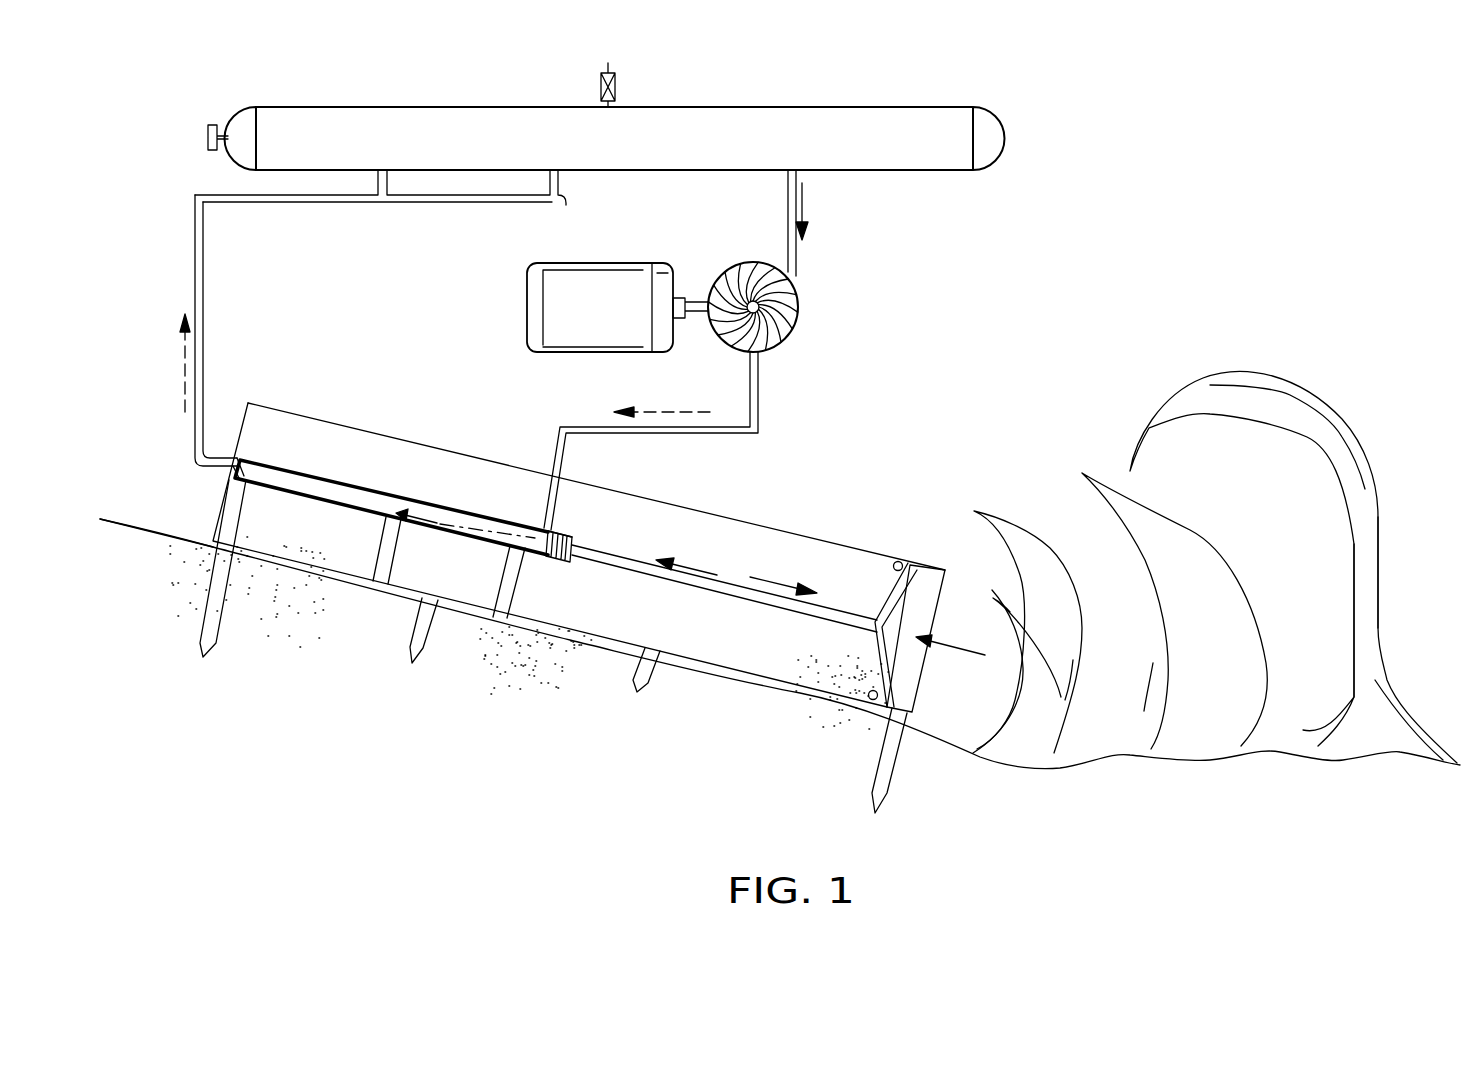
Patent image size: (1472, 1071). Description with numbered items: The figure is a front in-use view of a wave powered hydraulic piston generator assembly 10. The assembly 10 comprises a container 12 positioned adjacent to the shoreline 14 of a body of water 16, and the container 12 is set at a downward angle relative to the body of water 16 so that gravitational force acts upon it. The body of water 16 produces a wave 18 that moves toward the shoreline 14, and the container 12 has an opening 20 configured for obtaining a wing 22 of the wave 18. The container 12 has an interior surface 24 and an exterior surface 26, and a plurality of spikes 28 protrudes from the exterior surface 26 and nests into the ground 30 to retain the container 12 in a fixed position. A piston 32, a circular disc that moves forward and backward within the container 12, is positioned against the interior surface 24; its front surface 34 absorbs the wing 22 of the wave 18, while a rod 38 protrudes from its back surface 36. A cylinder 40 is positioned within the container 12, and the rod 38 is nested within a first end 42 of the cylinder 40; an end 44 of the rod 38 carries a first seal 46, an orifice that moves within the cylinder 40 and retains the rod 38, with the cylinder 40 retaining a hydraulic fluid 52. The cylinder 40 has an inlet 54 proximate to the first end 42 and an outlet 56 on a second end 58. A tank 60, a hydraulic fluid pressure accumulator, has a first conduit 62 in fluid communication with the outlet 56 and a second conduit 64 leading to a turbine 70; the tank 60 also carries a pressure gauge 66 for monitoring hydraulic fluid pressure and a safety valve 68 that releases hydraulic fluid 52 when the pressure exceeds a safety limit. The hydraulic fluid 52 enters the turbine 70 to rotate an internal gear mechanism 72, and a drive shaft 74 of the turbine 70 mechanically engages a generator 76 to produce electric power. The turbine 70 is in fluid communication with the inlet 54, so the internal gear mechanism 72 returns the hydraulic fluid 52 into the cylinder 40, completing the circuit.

The wave powered hydraulic piston generator assembly 10 is at (1135, 208).
The container 12 is at (607, 557).
The shoreline 14 is at (943, 737).
The body of water 16 is at (1178, 763).
The wave 18 is at (1356, 550).
The opening 20 is at (942, 593).
The wing of the wave 22 is at (1151, 430).
The interior surface 24 is at (857, 549).
The exterior surface 26 is at (298, 567).
The plurality of spikes 28 is at (408, 648).
The ground 30 is at (511, 698).
The piston 32 is at (876, 676).
The front surface 34 is at (890, 667).
The back surface 36 is at (877, 634).
The rod 38 is at (757, 596).
The cylinder 40 is at (343, 482).
The first end 42 is at (547, 558).
The end of the rod 44 is at (600, 557).
The first seal 46 is at (566, 533).
The hydraulic fluid 52 is at (183, 366).
The inlet 54 is at (547, 524).
The outlet 56 is at (236, 470).
The second end 58 is at (246, 480).
The tank 60 is at (615, 177).
The first conduit 62 is at (203, 256).
The second conduit 64 is at (796, 254).
The pressure gauge 66 is at (208, 138).
The safety valve 68 is at (616, 82).
The turbine 70 is at (817, 327).
The internal gear mechanism 72 is at (799, 305).
The drive shaft 74 is at (700, 303).
The generator 76 is at (527, 290).